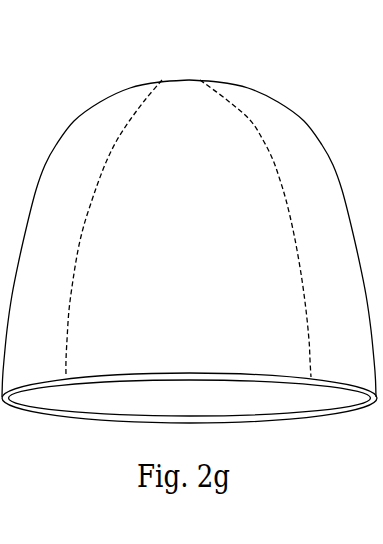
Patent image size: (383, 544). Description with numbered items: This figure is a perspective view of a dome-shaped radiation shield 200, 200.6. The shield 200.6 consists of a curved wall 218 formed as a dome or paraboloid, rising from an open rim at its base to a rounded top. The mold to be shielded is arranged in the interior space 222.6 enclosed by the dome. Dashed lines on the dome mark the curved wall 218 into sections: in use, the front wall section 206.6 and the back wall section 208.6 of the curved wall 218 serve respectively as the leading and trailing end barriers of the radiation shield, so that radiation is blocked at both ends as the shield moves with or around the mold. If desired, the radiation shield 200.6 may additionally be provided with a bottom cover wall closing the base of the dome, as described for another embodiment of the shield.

The radiation shield 200 is at (132, 75).
The radiation shield 200.6 is at (189, 250).
The front wall section 206.6 is at (298, 138).
The back wall section 208.6 is at (90, 135).
The curved wall 218 is at (232, 87).
The interior space 222.6 is at (285, 403).